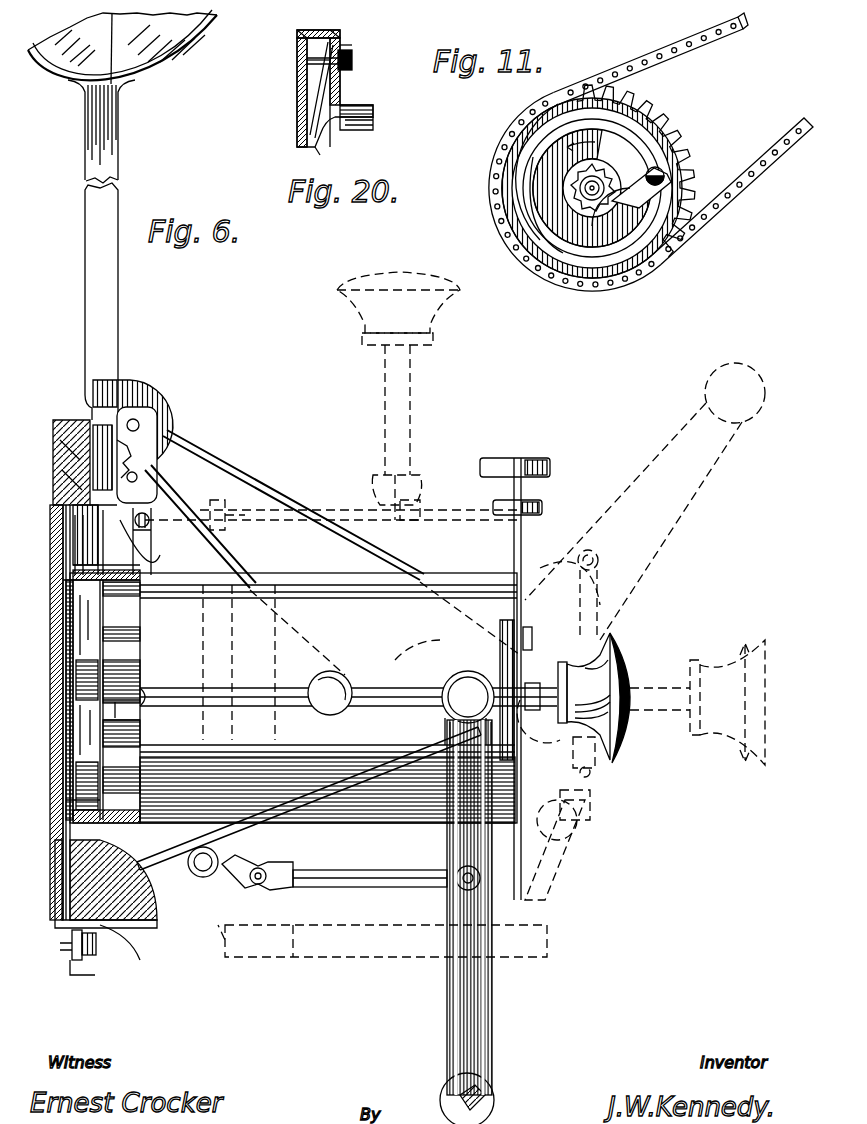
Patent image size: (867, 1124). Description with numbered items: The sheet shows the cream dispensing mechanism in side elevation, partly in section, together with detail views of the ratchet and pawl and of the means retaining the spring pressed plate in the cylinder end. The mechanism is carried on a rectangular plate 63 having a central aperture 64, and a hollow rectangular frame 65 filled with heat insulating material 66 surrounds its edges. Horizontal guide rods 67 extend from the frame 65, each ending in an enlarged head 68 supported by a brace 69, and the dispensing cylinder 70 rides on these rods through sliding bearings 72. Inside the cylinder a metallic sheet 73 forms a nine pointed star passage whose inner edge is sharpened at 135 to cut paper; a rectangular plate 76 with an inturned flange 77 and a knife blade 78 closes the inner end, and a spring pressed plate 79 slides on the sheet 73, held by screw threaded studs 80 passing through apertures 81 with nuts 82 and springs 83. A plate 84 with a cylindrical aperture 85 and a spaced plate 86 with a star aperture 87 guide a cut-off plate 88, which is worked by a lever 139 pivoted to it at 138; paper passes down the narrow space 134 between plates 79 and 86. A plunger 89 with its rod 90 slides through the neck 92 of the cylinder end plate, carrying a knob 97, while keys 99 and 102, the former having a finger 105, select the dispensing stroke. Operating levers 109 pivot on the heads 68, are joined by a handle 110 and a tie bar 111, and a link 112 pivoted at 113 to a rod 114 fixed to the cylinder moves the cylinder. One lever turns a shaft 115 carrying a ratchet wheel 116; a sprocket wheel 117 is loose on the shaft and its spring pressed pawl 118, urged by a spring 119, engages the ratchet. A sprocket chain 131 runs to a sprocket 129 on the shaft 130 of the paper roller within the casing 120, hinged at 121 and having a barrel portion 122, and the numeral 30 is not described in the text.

In FIG. 6, the plate 30 is at (60, 566).
In FIG. 6, the rectangular plate 63 is at (53, 445).
In FIG. 6, the central aperture 64 is at (60, 581).
In FIG. 6, the hollow rectangular frame 65 is at (68, 418).
In FIG. 6, the heat insulating material 66 is at (55, 462).
In FIG. 6, the guide rods 67 is at (305, 708).
In FIG. 6, the enlarged head 68 is at (468, 672).
In FIG. 6, the brace 69 is at (325, 822).
In FIG. 6, the dispensing cylinder 70 is at (468, 573).
In FIG. 20, the dispensing cylinder 70 is at (370, 130).
In FIG. 6, the sliding bearings 72 is at (335, 688).
In FIG. 6, the metallic sheet 73 is at (130, 640).
In FIG. 6, the rectangular plate 76 is at (160, 578).
In FIG. 20, the rectangular plate 76 is at (342, 100).
In FIG. 6, the inturned flange 77 is at (52, 510).
In FIG. 20, the inturned flange 77 is at (335, 30).
In FIG. 6, the knife blade 78 is at (70, 520).
In FIG. 20, the knife blade 78 is at (297, 35).
In FIG. 6, the rectangular plate 79 is at (70, 540).
In FIG. 20, the rectangular plate 79 is at (297, 95).
In FIG. 20, the screw threaded stud 80 is at (307, 62).
In FIG. 20, the aperture 81 is at (348, 45).
In FIG. 6, the nut 82 is at (150, 530).
In FIG. 20, the nut 82 is at (352, 58).
In FIG. 6, the springs 83 is at (135, 560).
In FIG. 20, the springs 83 is at (332, 159).
In FIG. 6, the rectangular plate 84 is at (70, 824).
In FIG. 6, the cylindrical aperture 85 is at (66, 798).
In FIG. 6, the plate 86 is at (76, 632).
In FIG. 6, the aperture 87 is at (73, 790).
In FIG. 6, the cut-off plate 88 is at (72, 942).
In FIG. 6, the plunger 89 is at (140, 735).
In FIG. 6, the rod 90 is at (415, 395).
In FIG. 6, the neck 92 is at (425, 505).
In FIG. 6, the knob 97 is at (630, 650).
In FIG. 6, the key 99 is at (522, 535).
In FIG. 6, the key 102 is at (530, 495).
In FIG. 6, the finger 105 is at (342, 465).
In FIG. 6, the operating levers 109 is at (480, 1030).
In FIG. 6, the handle 110 is at (740, 380).
In FIG. 6, the tie bar 111 is at (482, 878).
In FIG. 6, the link 112 is at (595, 865).
In FIG. 6, the pivot 113 is at (597, 775).
In FIG. 6, the rod 114 is at (592, 615).
In FIG. 11, the shaft 115 is at (588, 205).
In FIG. 11, the ratchet wheel 116 is at (600, 167).
In FIG. 11, the sprocket wheel 117 is at (662, 128).
In FIG. 11, the spring pressed pawl 118 is at (671, 182).
In FIG. 11, the spring 119 is at (630, 240).
In FIG. 6, the casing 120 is at (90, 110).
In FIG. 6, the hinge 121 is at (199, 504).
In FIG. 6, the barrel portion 122 is at (170, 50).
In FIG. 6, the sprocket 129 is at (176, 405).
In FIG. 6, the shaft 130 is at (140, 425).
In FIG. 6, the sprocket chain 131 is at (280, 495).
In FIG. 11, the sprocket chain 131 is at (651, 152).
In FIG. 6, the narrow space 134 is at (137, 455).
In FIG. 6, the sharpened edge 135 is at (66, 596).
In FIG. 6, the pivot 138 is at (118, 950).
In FIG. 6, the lever 139 is at (85, 965).